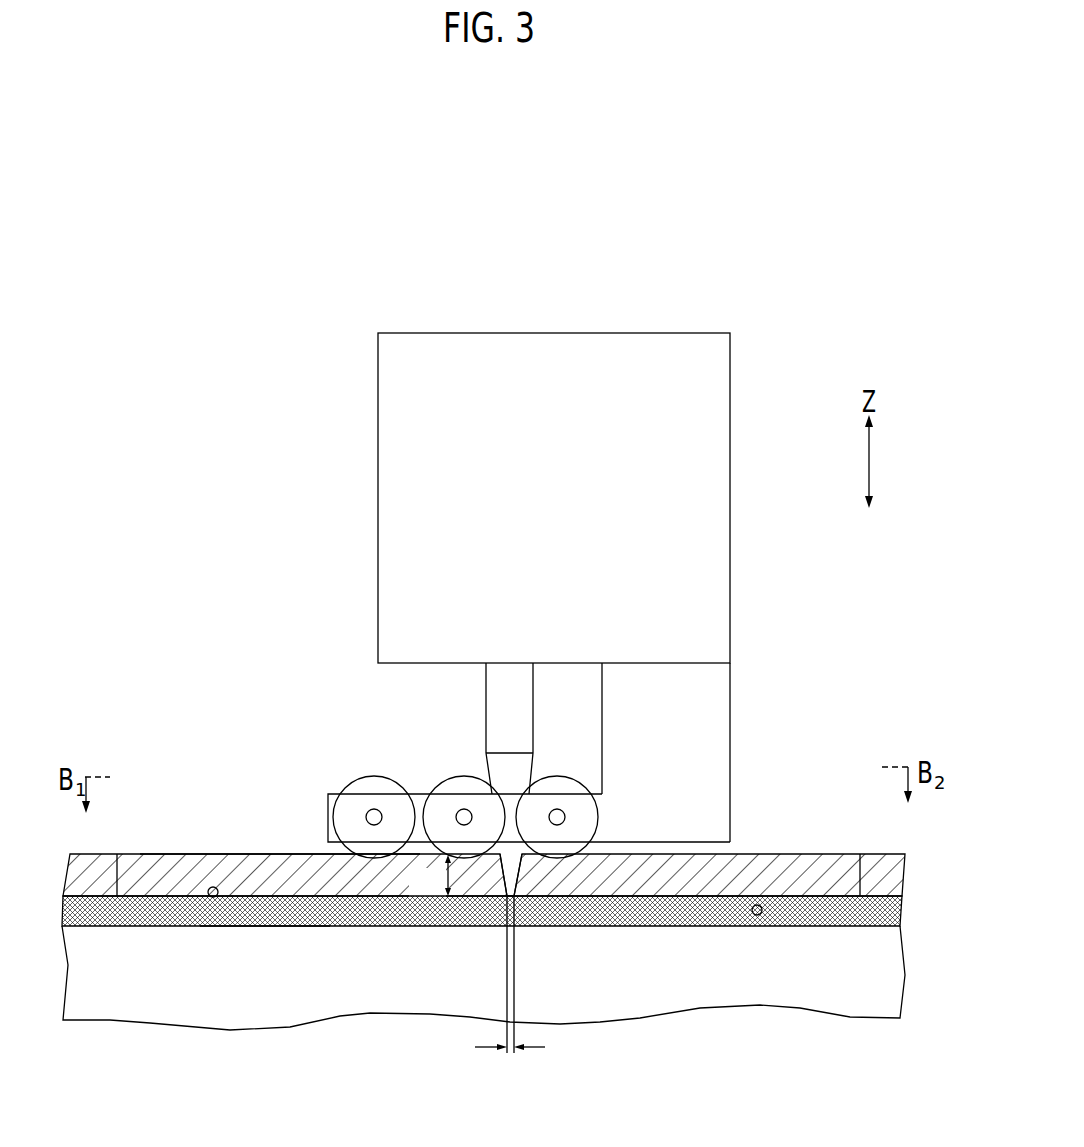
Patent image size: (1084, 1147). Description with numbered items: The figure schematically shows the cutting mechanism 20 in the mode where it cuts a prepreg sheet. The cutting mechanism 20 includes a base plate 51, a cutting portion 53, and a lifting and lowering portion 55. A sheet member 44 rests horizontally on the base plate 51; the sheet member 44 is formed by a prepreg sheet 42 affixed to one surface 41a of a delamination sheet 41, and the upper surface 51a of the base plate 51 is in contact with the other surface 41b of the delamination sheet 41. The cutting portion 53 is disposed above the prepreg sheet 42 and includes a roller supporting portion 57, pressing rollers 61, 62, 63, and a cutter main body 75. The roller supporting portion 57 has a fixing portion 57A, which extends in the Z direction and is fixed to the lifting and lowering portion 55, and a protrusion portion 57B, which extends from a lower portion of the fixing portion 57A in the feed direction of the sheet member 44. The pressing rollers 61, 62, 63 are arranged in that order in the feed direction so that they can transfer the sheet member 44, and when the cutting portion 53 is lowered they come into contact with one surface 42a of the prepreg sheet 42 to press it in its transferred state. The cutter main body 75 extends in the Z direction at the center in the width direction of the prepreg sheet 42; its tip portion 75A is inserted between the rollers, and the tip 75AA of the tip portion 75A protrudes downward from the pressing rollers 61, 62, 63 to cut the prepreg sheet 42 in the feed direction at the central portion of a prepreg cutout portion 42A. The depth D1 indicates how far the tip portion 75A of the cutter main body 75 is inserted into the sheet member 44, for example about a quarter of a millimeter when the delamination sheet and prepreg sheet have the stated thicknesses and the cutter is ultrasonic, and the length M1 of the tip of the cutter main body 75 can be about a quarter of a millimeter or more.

The cutting mechanism 20 is at (320, 410).
The lifting and lowering portion 55 is at (575, 380).
The cutting portion 53 is at (753, 728).
The roller supporting portion 57 is at (744, 808).
The fixing portion 57A is at (687, 703).
The protrusion portion 57B is at (333, 805).
The cutter main body 75 is at (476, 729).
The tip portion 75A is at (522, 776).
The tip 75AA is at (513, 898).
The pressing roller 61 is at (562, 857).
The pressing roller 62 is at (466, 857).
The pressing roller 63 is at (384, 857).
The sheet member 44 is at (483, 955).
The prepreg sheet 42 is at (343, 878).
The prepreg cutout portion 42A is at (215, 853).
The one surface 42a is at (298, 853).
The delamination sheet 41 is at (308, 912).
The one surface 41a is at (209, 897).
The other surface 41b is at (268, 927).
The base plate 51 is at (858, 985).
The upper surface 51a is at (757, 912).
The depth D1 is at (430, 880).
The length M1 is at (510, 992).